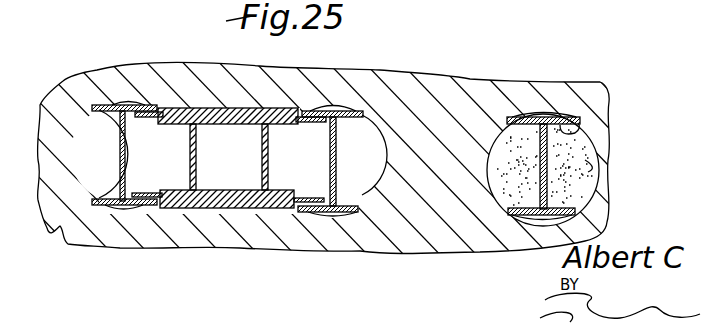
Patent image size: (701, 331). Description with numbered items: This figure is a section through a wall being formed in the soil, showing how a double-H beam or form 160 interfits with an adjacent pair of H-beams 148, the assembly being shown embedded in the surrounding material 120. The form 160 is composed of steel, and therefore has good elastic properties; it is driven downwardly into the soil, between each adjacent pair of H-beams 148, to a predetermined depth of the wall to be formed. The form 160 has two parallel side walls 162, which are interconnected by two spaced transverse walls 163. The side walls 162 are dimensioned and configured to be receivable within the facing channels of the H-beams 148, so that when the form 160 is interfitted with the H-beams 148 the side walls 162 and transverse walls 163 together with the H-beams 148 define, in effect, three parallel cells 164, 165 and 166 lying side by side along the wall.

The concrete slab / body 120 is at (592, 170).
The H-beam 148 is at (103, 104).
The double-H beam or form 160 is at (174, 108).
The side wall 162 is at (247, 108).
The transverse wall 163 is at (196, 160).
The cell 164 is at (166, 182).
The cell 165 is at (230, 188).
The cell 166 is at (302, 184).